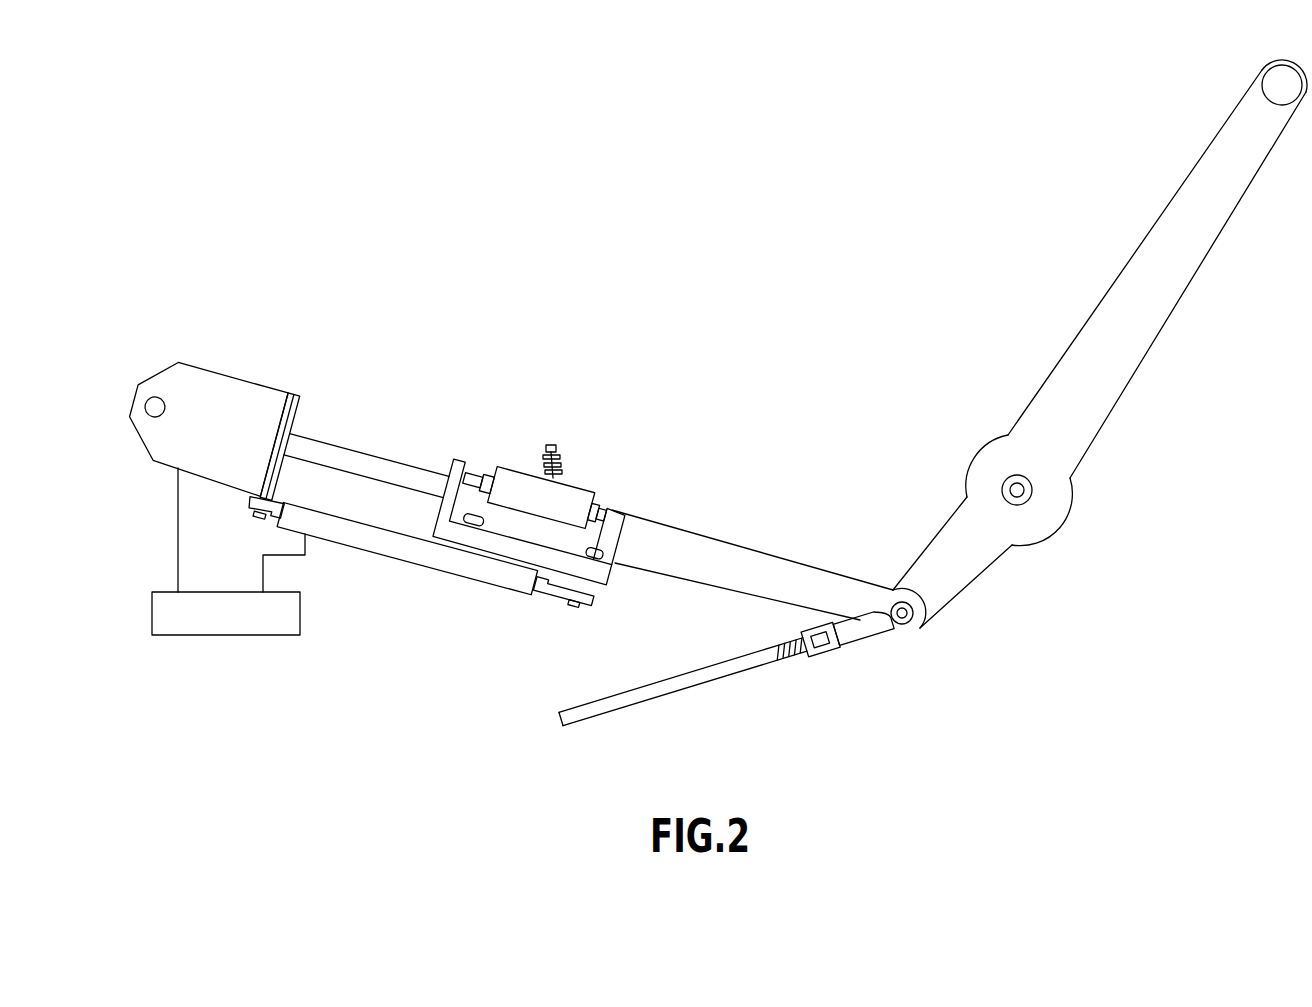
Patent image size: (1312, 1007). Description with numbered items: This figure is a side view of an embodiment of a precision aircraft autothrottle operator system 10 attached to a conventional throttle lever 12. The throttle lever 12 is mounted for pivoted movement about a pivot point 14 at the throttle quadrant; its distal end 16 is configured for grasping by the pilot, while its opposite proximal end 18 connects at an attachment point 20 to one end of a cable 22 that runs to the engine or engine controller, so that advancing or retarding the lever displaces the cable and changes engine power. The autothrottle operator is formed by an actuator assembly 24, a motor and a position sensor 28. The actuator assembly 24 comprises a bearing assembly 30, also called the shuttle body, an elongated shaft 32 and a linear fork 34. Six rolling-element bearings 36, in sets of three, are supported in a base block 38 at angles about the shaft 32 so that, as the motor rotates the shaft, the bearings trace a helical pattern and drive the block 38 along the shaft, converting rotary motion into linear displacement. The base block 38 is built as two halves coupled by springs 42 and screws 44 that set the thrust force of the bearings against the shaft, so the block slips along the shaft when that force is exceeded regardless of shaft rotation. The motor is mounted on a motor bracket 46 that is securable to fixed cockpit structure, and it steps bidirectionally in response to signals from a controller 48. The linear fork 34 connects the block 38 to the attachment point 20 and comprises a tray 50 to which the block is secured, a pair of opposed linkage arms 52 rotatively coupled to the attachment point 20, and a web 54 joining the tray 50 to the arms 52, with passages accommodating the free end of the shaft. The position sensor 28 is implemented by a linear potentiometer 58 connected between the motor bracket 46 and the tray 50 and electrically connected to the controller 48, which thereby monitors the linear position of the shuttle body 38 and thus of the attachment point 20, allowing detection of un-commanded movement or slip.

The autothrottle operator system 10 is at (730, 295).
The throttle lever 12 is at (1205, 288).
The pivot point 14 is at (1028, 490).
The distal end 16 is at (1275, 83).
The proximal end 18 is at (970, 568).
The attachment point 20 is at (908, 622).
The cable 22 is at (733, 670).
The actuator assembly 24 is at (643, 602).
The position sensor 28 is at (418, 568).
The bearing assembly 30 is at (620, 497).
The elongated shaft 32 is at (370, 461).
The linear fork 34 is at (818, 560).
The rolling-element bearings 36 is at (490, 478).
The base block 38 is at (512, 480).
The springs 42 is at (557, 472).
The screws 44 is at (555, 447).
The motor bracket 46 is at (292, 393).
The controller 48 is at (226, 637).
The tray 50 is at (550, 563).
The linkage arms 52 is at (720, 585).
The web 54 is at (627, 538).
The linear potentiometer 58 is at (330, 530).